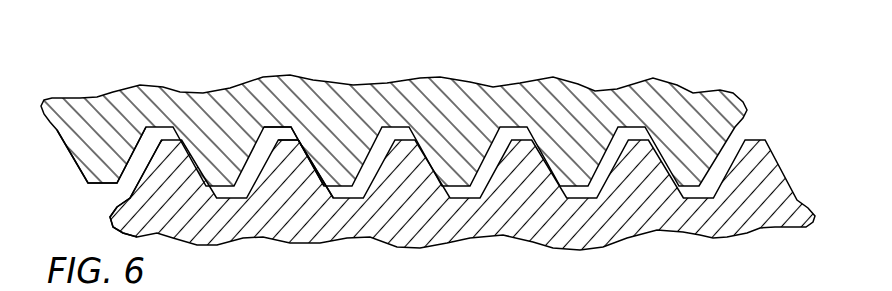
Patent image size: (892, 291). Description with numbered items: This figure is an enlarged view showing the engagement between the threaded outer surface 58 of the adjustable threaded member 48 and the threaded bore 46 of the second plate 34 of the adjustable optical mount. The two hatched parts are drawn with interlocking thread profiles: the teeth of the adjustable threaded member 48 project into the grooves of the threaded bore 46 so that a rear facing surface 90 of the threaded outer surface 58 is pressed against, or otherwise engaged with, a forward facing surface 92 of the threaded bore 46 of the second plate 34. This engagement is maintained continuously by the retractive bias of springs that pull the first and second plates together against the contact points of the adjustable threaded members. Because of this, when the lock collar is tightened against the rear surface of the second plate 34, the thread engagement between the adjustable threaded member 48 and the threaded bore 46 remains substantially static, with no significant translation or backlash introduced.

The adjustable threaded member 48 is at (363, 105).
The second plate 34 is at (423, 208).
The threaded outer surface 58 is at (138, 147).
The rear facing surface 90 is at (305, 143).
The forward facing surface 92 is at (308, 148).
The threaded bore 46 is at (128, 196).